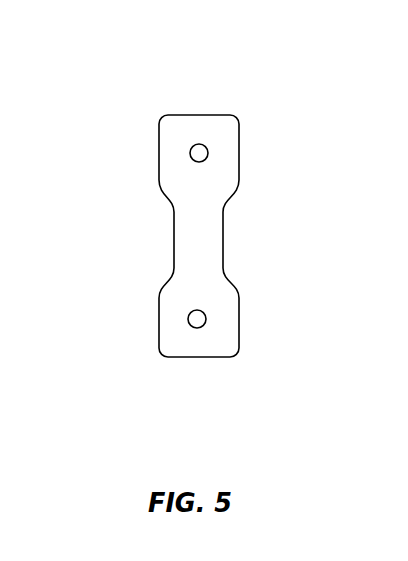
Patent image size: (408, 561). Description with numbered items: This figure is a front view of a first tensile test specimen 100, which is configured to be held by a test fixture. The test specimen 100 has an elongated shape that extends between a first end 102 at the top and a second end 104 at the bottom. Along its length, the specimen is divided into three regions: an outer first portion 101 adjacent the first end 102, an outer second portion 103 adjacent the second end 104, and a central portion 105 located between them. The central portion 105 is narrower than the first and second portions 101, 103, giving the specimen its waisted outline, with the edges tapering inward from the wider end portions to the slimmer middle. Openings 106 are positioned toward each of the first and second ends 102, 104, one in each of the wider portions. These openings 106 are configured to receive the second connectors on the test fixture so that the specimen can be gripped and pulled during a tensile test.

The test specimen 100 is at (107, 173).
The first portion 101 is at (255, 152).
The first end 102 is at (180, 115).
The second portion 103 is at (255, 320).
The second end 104 is at (181, 357).
The central portion 105 is at (147, 244).
The openings 106 is at (199, 153).